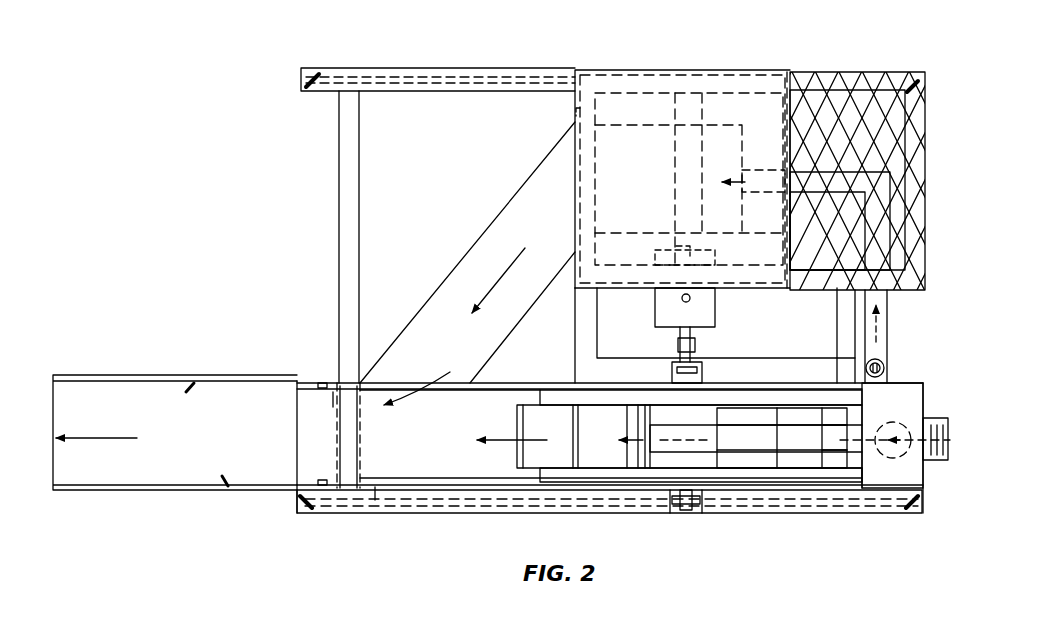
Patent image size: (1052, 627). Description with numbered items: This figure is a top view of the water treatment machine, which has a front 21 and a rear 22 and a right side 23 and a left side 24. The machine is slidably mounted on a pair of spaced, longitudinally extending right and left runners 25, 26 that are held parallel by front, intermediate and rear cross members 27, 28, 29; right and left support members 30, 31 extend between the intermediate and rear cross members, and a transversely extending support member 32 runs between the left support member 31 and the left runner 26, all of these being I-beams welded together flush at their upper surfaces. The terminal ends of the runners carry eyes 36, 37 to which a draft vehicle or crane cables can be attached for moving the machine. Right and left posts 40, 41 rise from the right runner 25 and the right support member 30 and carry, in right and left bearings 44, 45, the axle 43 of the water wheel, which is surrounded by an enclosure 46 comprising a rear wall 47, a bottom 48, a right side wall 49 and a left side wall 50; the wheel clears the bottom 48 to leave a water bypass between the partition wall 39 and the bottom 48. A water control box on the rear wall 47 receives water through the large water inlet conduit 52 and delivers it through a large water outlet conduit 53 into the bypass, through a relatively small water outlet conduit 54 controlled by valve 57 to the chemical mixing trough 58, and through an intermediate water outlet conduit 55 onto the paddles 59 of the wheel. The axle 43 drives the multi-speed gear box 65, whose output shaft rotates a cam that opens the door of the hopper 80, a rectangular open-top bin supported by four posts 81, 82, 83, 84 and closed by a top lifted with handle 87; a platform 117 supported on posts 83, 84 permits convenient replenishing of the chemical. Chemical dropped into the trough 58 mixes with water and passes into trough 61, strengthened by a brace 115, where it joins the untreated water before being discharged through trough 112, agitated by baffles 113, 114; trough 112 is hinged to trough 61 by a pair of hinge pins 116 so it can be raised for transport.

The front 21 is at (258, 272).
The rear 22 is at (917, 330).
The right side 23 is at (747, 538).
The left side 24 is at (523, 67).
The right runner 25 is at (426, 513).
The left runner 26 is at (356, 72).
The front cross member 27 is at (360, 200).
The intermediate cross member 28 is at (571, 111).
The rear cross member 29 is at (848, 320).
The right support member 30 is at (786, 372).
The left support member 31 is at (572, 290).
The transversely extending support member 32 is at (672, 175).
The eye 36 is at (306, 508).
The eye 37 is at (312, 72).
The partition wall 39 is at (540, 402).
The right post 40 is at (695, 505).
The left post 41 is at (702, 375).
The axle 43 is at (720, 470).
The right bearing 44 is at (672, 500).
The left bearing 45 is at (692, 360).
The enclosure 46 is at (560, 485).
The rear wall 47 is at (866, 475).
The bottom 48 is at (398, 496).
The right side wall 49 is at (477, 490).
The left side wall 50 is at (565, 382).
The water inlet conduit 52 is at (931, 418).
The water outlet conduit 53 is at (915, 470).
The water outlet conduit 54 is at (888, 298).
The water outlet conduit 55 is at (826, 453).
The valve 57 is at (886, 366).
The chemical mixing trough 58 is at (480, 268).
The paddles 59 is at (760, 418).
The trough 61 is at (388, 460).
The multi-speed gear box 65 is at (660, 308).
The hopper 80 is at (628, 103).
The post 81 is at (598, 292).
The post 82 is at (578, 70).
The post 83 is at (790, 288).
The post 84 is at (781, 82).
The handle 87 is at (790, 165).
The trough 112 is at (165, 492).
The baffle 113 is at (222, 480).
The baffle 114 is at (194, 390).
The brace 115 is at (346, 428).
The hinge pins 116 is at (322, 378).
The platform 117 is at (912, 180).